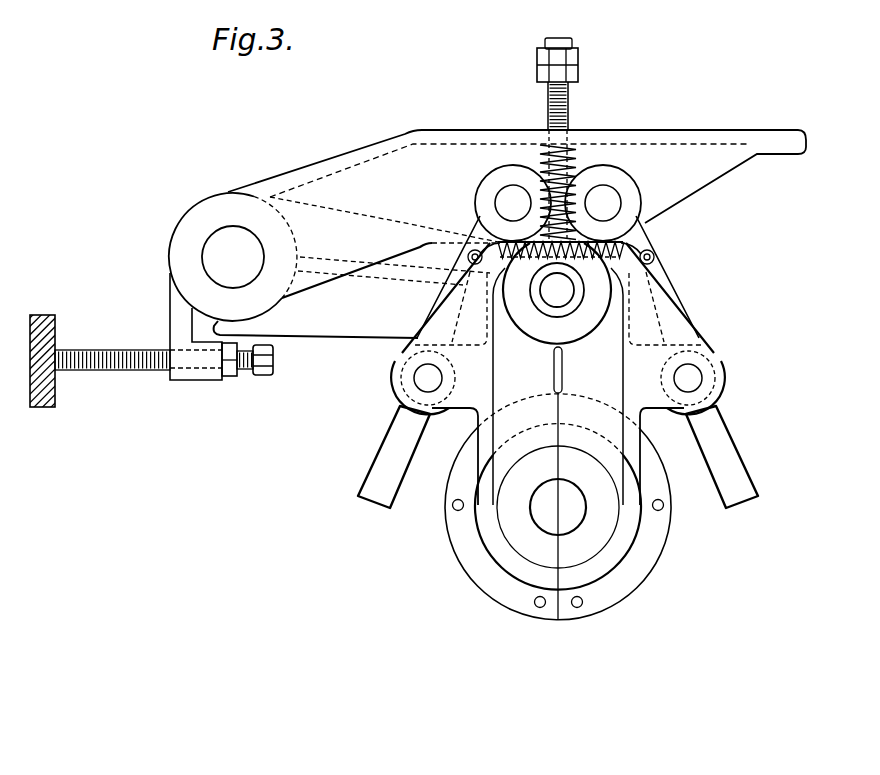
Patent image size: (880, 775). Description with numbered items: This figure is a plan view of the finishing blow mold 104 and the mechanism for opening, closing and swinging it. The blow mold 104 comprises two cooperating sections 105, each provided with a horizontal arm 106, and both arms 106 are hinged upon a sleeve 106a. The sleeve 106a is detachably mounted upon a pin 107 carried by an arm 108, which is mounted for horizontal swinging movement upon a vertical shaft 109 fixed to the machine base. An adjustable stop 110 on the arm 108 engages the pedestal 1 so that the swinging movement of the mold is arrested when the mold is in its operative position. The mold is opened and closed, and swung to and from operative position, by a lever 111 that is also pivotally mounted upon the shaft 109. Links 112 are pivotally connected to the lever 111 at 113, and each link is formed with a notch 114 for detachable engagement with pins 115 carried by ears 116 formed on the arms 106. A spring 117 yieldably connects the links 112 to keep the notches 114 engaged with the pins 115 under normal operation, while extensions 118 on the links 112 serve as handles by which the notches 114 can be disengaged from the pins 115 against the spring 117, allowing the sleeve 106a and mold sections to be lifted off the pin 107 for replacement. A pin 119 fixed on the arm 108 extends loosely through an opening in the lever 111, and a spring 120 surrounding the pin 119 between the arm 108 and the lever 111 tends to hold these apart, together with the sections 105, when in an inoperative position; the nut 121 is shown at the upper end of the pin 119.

The pedestal 1 is at (52, 407).
The blow mold 104 is at (485, 588).
The cooperating sections 105 is at (458, 553).
The horizontal arm 106 is at (558, 444).
The sleeve 106a is at (580, 285).
The pin 107 is at (563, 297).
The arm 108 is at (332, 330).
The vertical shaft 109 is at (222, 230).
The adjustable stop 110 is at (115, 371).
The lever 111 is at (688, 130).
The links 112 is at (438, 300).
The pivotal connection 113 is at (500, 200).
The notch 114 is at (398, 404).
The pins 115 is at (413, 378).
The ears 116 is at (447, 322).
The spring 117 is at (620, 242).
The extensions 118 is at (373, 468).
The pin 119 is at (568, 102).
The spring 120 is at (575, 165).
The nut 121 is at (580, 73).